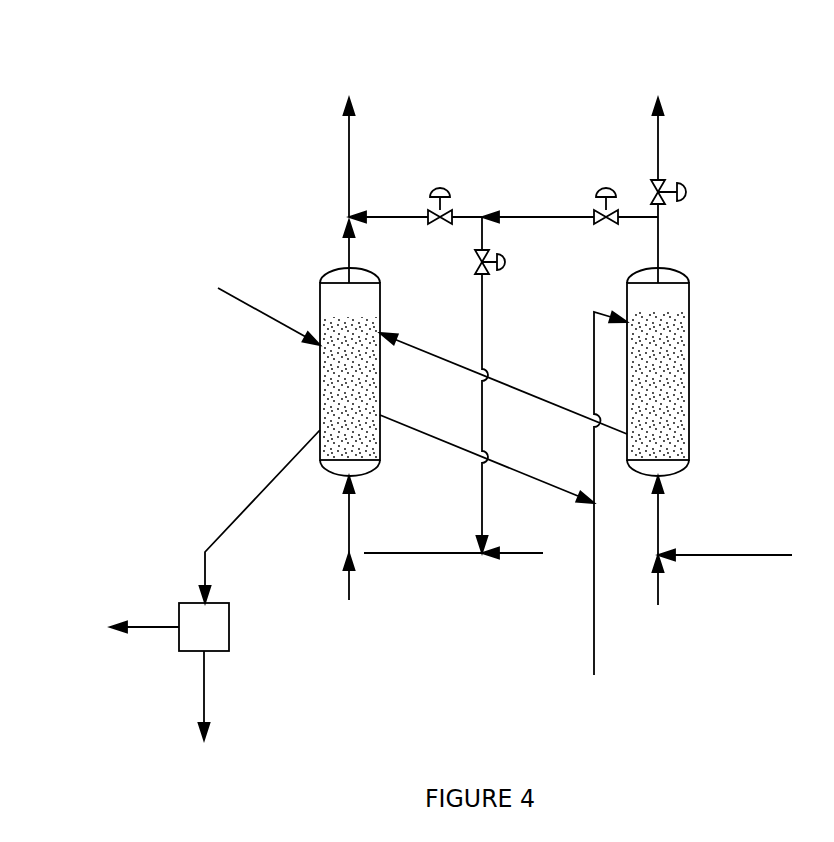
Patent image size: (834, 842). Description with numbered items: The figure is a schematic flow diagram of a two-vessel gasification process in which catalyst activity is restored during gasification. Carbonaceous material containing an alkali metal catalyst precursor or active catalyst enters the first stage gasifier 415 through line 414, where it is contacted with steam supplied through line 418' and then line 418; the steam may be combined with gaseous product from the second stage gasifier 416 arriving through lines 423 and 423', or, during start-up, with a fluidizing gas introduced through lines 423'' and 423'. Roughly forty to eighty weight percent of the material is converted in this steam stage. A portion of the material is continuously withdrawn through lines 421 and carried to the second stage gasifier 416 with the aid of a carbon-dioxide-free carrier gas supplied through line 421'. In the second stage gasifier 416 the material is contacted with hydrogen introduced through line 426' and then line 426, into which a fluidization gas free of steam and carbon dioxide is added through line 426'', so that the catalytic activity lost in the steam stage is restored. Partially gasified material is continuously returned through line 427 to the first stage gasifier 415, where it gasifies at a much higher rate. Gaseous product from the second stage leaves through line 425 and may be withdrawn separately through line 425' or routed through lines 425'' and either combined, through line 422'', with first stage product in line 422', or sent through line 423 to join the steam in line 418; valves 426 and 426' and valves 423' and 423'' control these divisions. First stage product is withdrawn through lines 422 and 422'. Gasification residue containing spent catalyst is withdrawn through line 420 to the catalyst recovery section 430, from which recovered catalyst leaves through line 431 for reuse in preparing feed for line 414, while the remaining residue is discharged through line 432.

The line 414 is at (248, 305).
The first stage gasifier 415 is at (320, 393).
The second stage gasifier 416 is at (690, 367).
The line 418 is at (321, 514).
The line 418' is at (319, 576).
The line 420 is at (241, 510).
The lines 421 is at (503, 407).
The line 421' is at (632, 589).
The line 422 is at (374, 251).
The line 422' is at (378, 157).
The line 422'' is at (430, 197).
The line 423 is at (512, 385).
The valve / line 423' is at (423, 395).
The valve / line 423'' is at (503, 427).
The line 425 is at (696, 250).
The line 425' is at (696, 157).
The lines 425'' is at (570, 218).
The line 426 is at (692, 515).
The line / valve 426' is at (659, 375).
The line 426'' is at (740, 539).
The line 427 is at (510, 383).
The catalyst recovery section 430 is at (220, 626).
The line 431 is at (150, 625).
The line 432 is at (205, 684).